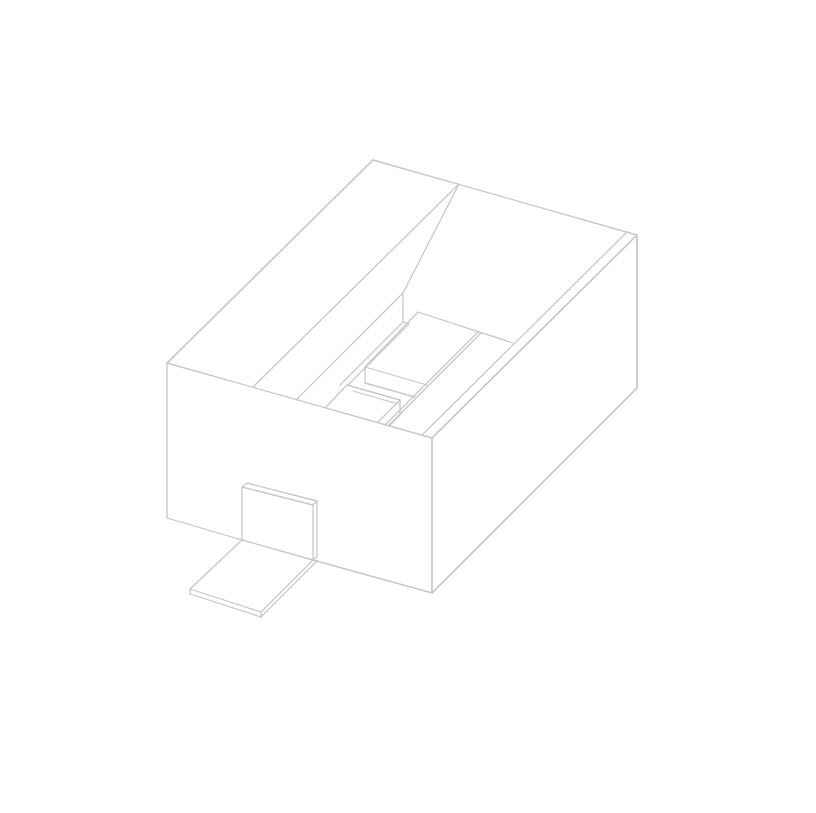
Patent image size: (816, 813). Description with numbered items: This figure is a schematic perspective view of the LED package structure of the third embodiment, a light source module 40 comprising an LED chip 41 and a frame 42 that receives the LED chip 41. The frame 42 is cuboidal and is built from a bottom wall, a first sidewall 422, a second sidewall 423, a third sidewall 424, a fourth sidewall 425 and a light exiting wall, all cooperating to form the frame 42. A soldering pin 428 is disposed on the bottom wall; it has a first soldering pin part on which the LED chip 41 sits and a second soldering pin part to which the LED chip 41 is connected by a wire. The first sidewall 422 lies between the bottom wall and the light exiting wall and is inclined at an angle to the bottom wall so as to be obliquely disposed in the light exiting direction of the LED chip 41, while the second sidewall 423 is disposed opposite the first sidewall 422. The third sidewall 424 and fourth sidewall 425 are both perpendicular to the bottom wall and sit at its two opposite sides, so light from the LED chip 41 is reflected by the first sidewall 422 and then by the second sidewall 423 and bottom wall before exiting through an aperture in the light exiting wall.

The light source module 40 is at (395, 39).
The LED chip 41 is at (362, 414).
The frame 42 is at (343, 165).
The first sidewall 422 is at (255, 305).
The second sidewall 423 is at (609, 370).
The third sidewall 424 is at (182, 482).
The fourth sidewall 425 is at (550, 222).
The soldering pin 428 is at (417, 337).